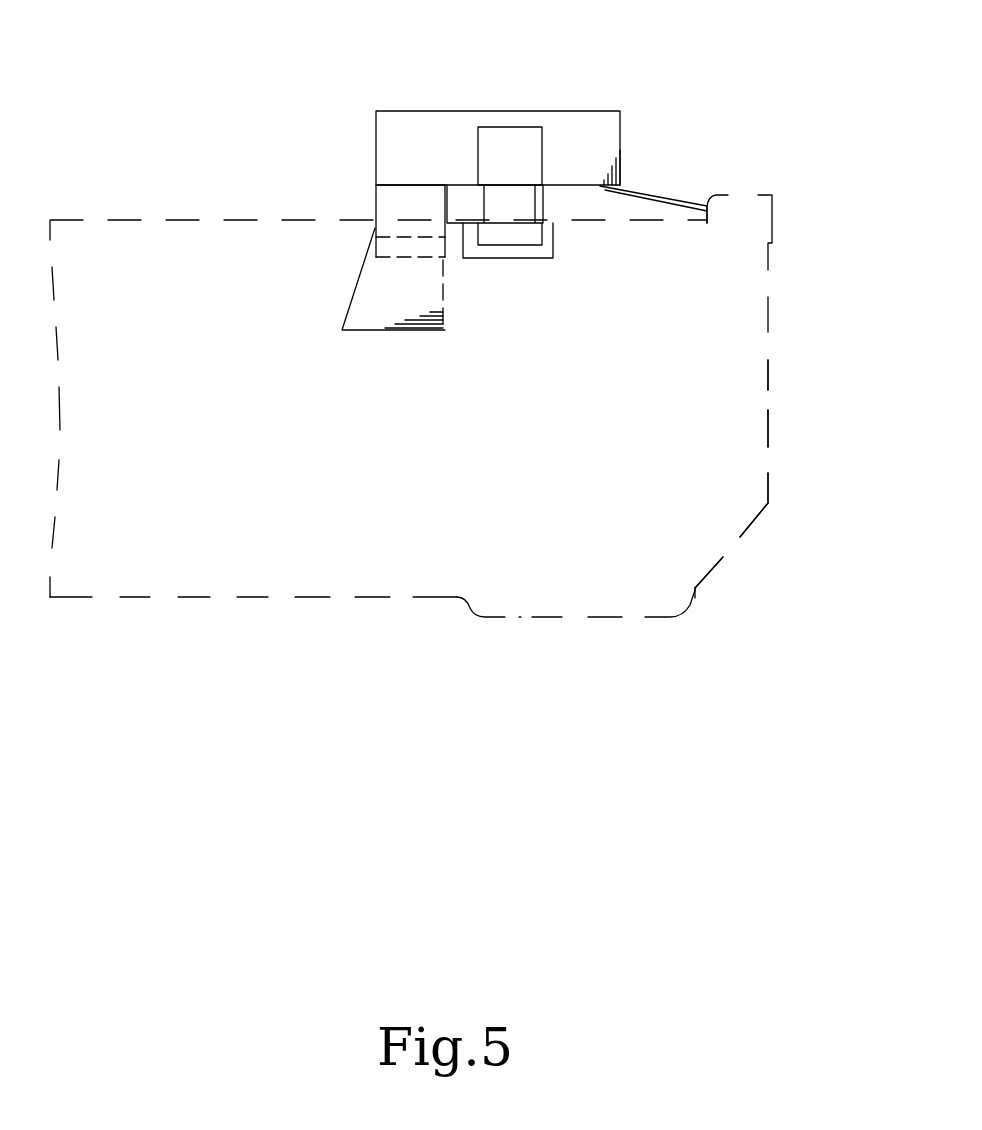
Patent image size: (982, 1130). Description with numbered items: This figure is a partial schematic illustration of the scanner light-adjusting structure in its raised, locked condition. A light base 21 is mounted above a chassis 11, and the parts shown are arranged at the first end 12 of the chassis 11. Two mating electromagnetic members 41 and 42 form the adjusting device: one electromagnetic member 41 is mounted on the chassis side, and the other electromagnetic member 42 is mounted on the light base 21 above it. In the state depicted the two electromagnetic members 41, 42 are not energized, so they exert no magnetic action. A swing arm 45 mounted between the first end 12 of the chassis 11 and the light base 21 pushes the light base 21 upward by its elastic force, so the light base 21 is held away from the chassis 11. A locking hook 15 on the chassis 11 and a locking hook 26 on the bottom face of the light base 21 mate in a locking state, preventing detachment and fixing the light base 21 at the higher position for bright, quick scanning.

The chassis 11 is at (805, 298).
The first end 12 is at (743, 407).
The locking hook 15 is at (385, 323).
The light base 21 is at (574, 110).
The locking hook 26 is at (383, 200).
The electromagnetic member 41 is at (520, 238).
The electromagnetic member 42 is at (507, 132).
The swing arm 45 is at (660, 187).